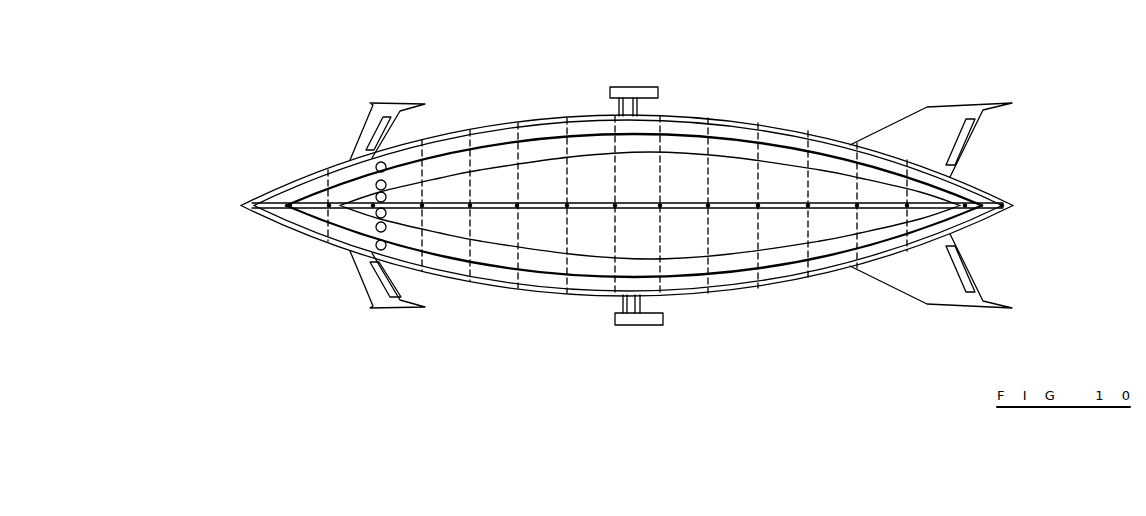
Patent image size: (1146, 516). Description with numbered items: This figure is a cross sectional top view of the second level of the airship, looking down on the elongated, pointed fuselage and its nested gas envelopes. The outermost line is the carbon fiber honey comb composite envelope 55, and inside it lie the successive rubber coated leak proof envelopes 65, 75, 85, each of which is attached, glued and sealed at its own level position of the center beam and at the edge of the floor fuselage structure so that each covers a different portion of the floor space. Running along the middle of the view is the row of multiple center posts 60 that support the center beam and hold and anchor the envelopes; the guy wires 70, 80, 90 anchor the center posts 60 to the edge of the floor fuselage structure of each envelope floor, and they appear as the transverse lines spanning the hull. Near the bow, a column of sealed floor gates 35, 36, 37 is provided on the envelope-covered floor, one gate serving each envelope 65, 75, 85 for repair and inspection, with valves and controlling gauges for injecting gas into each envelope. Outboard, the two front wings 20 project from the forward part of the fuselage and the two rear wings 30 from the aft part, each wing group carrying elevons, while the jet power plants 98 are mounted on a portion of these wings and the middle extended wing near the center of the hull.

The front wings 20 is at (357, 137).
The rear wings 30 is at (910, 137).
The sealed floor gate 35 is at (340, 184).
The sealed floor gate 36 is at (360, 171).
The sealed floor gate 37 is at (363, 160).
The carbon fiber honey comb composite envelope 55 is at (482, 132).
The center post 60 is at (470, 208).
The envelope 65 is at (504, 130).
The guy wire 70 is at (660, 150).
The envelope 75 is at (534, 139).
The guy wire 80 is at (722, 191).
The envelope 85 is at (561, 157).
The guy wire 90 is at (722, 193).
The jet power plant 98 is at (625, 87).